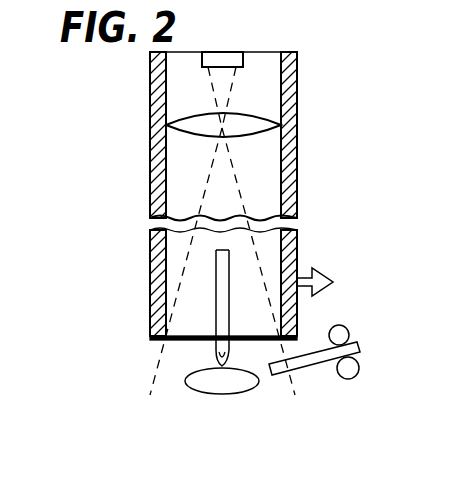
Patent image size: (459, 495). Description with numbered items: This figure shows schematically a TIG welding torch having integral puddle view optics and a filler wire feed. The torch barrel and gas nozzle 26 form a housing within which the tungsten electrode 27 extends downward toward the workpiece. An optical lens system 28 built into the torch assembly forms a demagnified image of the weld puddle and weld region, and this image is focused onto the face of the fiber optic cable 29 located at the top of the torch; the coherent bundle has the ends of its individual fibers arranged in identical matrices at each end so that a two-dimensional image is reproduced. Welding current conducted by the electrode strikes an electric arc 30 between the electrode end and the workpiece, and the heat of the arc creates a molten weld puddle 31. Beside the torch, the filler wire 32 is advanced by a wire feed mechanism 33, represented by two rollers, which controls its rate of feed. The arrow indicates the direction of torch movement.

The torch barrel and gas nozzle 26 is at (297, 124).
The tungsten electrode 27 is at (218, 272).
The optical lens system 28 is at (168, 126).
The fiber optic cable 29 is at (225, 58).
The electric arc 30 is at (218, 364).
The molten weld puddle 31 is at (185, 381).
The filler wire 32 is at (308, 368).
The wire feed mechanism 33 is at (347, 327).